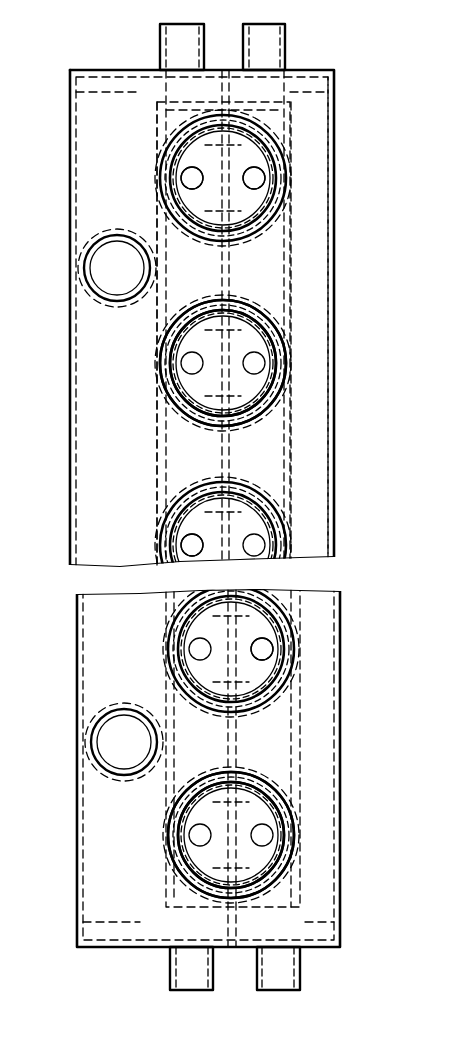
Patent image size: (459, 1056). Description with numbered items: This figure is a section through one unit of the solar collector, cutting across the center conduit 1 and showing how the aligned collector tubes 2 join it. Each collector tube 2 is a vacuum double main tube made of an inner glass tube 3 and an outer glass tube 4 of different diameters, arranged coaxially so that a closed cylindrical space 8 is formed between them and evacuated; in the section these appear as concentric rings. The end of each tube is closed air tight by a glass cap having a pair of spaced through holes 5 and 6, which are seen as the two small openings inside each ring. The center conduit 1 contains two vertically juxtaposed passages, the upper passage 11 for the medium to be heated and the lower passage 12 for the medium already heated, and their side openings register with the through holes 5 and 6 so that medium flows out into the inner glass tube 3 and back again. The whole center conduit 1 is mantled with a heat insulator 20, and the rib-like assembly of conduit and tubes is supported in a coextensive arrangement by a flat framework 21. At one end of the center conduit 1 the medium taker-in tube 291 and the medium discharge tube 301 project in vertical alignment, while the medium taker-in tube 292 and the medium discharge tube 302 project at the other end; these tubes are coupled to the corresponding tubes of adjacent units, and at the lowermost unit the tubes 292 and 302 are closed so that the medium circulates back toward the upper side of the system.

The center conduit 1 is at (307, 503).
The collector tube 2 is at (296, 540).
The inner glass tube 3 is at (270, 405).
The outer glass tube 4 is at (266, 328).
The through hole 5 is at (258, 178).
The through hole 6 is at (190, 177).
The cylindrical space 8 is at (275, 380).
The upper passage 11 is at (278, 256).
The lower passage 12 is at (170, 420).
The heat insulator 20 is at (320, 686).
The flat framework 21 is at (84, 268).
The medium taker-in tube 291 is at (276, 40).
The medium taker-in tube 292 is at (290, 966).
The medium discharge tube 301 is at (168, 50).
The medium discharge tube 302 is at (180, 966).